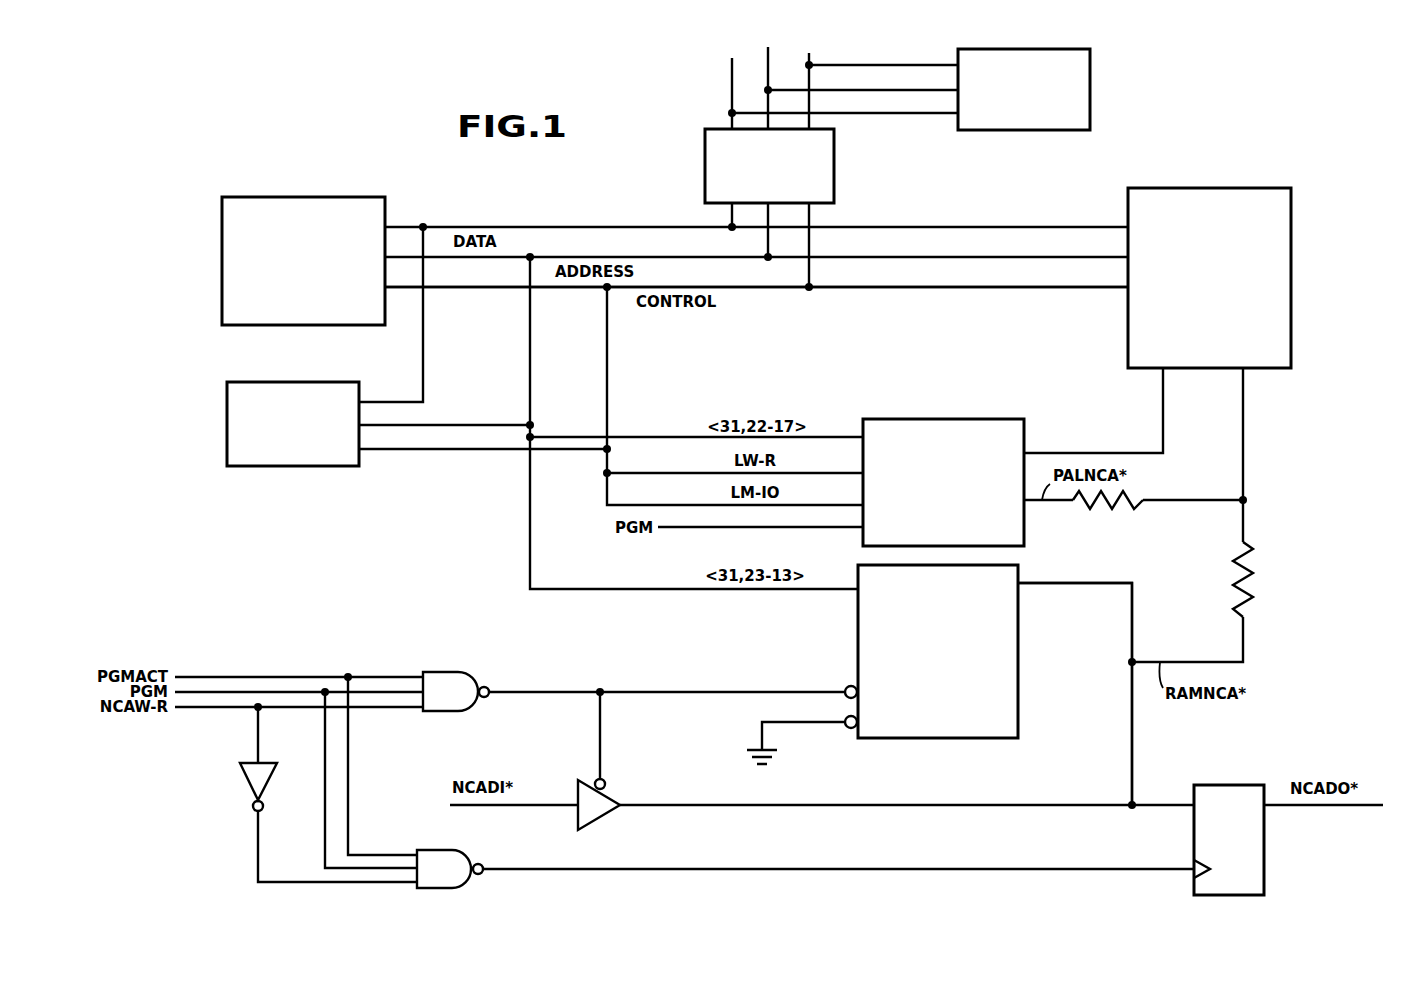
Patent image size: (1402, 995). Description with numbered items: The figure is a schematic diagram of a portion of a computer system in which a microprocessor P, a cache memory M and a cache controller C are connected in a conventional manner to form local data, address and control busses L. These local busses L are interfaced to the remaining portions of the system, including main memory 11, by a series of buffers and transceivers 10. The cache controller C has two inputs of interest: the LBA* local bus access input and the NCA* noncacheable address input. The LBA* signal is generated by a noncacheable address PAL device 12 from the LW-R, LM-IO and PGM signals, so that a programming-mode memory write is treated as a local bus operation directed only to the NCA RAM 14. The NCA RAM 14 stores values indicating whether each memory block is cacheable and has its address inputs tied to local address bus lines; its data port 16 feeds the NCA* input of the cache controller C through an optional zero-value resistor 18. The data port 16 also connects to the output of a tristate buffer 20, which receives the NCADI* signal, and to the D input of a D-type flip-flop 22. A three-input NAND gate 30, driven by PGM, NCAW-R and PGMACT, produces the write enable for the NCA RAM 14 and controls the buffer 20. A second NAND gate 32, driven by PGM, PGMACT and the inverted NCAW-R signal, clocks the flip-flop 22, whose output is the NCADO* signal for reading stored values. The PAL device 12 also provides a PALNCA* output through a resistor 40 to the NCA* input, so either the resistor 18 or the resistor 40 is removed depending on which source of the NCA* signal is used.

The buffers and transceivers 10 is at (834, 190).
The main memory 11 is at (1090, 107).
The noncacheable address programmable array logic device 12 is at (935, 419).
The NCA random access memory 14 is at (1018, 722).
The data port 16 is at (1080, 583).
The resistor 18 is at (1252, 592).
The tristate buffer 20 is at (600, 814).
The D-type flip-flop 22 is at (1240, 785).
The NAND gate 30 is at (468, 672).
The NAND gate 32 is at (462, 850).
The resistor 40 is at (1104, 506).
The microprocessor P is at (288, 197).
The cache controller C is at (1237, 188).
The cache memory M is at (275, 466).
The local data, address and control busses L is at (737, 307).